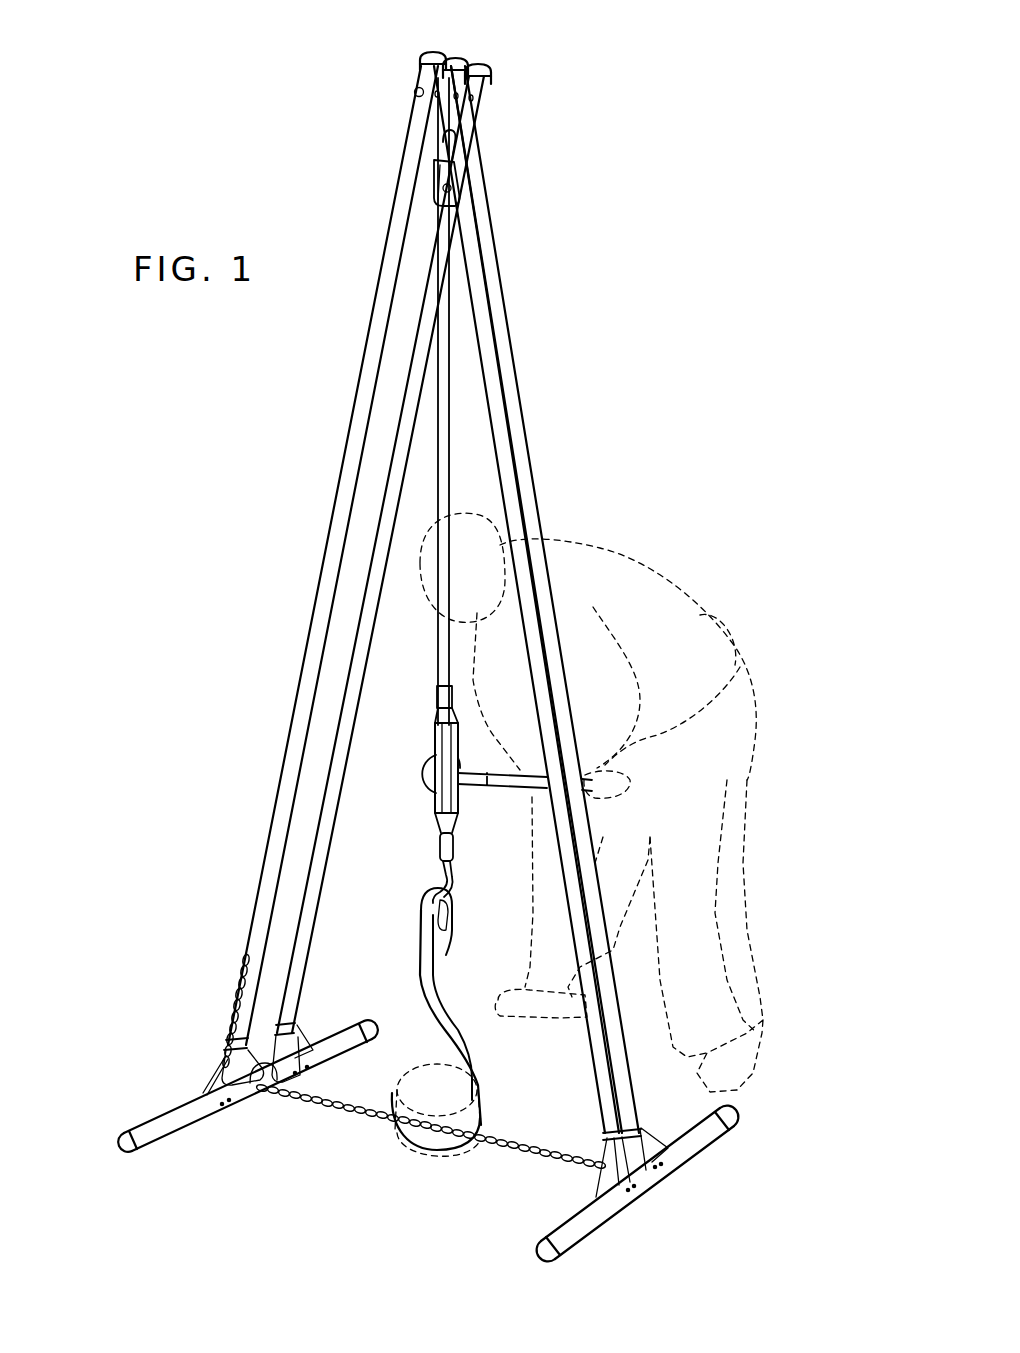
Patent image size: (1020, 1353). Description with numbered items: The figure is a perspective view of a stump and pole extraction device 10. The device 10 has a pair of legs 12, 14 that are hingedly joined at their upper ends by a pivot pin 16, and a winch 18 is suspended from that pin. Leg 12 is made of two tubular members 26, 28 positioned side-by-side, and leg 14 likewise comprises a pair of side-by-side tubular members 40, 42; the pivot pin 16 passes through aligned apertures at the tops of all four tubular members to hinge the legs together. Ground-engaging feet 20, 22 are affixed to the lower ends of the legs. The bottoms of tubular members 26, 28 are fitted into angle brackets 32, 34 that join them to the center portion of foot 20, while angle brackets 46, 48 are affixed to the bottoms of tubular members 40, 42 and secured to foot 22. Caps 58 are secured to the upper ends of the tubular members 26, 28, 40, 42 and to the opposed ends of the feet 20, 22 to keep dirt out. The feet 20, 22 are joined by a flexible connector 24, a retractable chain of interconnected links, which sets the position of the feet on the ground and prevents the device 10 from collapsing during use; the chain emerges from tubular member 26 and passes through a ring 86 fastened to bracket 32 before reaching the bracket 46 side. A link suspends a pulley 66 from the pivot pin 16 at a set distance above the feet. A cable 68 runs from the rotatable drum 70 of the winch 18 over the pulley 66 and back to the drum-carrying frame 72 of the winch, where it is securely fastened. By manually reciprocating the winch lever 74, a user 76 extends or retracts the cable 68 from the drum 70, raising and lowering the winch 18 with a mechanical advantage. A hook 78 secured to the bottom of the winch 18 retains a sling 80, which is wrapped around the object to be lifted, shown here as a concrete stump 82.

The stump and pole extraction device 10 is at (640, 190).
The leg 12 is at (366, 353).
The leg 14 is at (523, 386).
The pivot pin 16 is at (415, 90).
The winch 18 is at (426, 725).
The foot 20 is at (162, 1120).
The foot 22 is at (565, 1220).
The flexible connector 24 is at (330, 1117).
The tubular member 26 is at (338, 518).
The tubular member 28 is at (375, 580).
The angle bracket 32 is at (223, 1108).
The angle bracket 34 is at (300, 1072).
The tubular member 40 is at (512, 487).
The tubular member 42 is at (545, 580).
The angle bracket 46 is at (630, 1198).
The angle bracket 48 is at (662, 1176).
The cap 58 is at (478, 64).
The pulley 66 is at (460, 203).
The cable 68 is at (437, 655).
The rotatable drum 70 is at (418, 775).
The drum-carrying frame 72 is at (433, 800).
The winch lever 74 is at (498, 790).
The user 76 is at (732, 637).
The hook 78 is at (437, 888).
The sling 80 is at (458, 1030).
The concrete stump 82 is at (413, 1152).
The ring 86 is at (218, 1062).